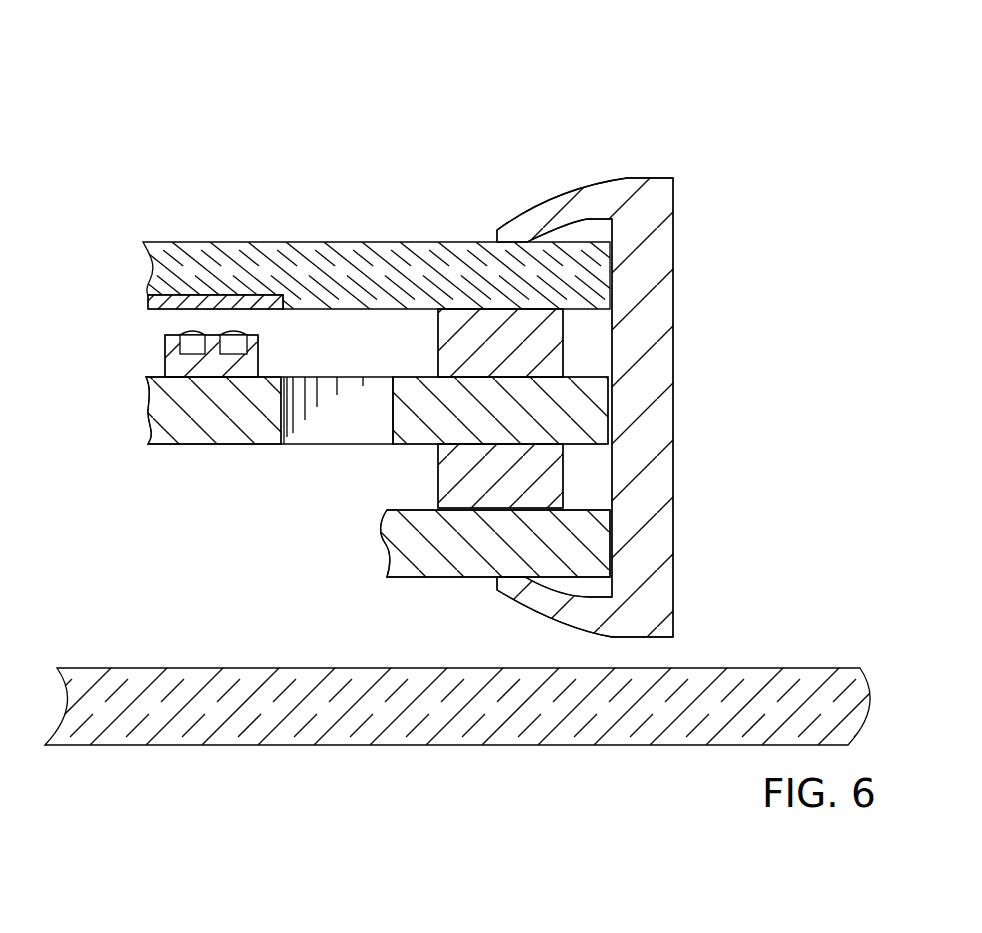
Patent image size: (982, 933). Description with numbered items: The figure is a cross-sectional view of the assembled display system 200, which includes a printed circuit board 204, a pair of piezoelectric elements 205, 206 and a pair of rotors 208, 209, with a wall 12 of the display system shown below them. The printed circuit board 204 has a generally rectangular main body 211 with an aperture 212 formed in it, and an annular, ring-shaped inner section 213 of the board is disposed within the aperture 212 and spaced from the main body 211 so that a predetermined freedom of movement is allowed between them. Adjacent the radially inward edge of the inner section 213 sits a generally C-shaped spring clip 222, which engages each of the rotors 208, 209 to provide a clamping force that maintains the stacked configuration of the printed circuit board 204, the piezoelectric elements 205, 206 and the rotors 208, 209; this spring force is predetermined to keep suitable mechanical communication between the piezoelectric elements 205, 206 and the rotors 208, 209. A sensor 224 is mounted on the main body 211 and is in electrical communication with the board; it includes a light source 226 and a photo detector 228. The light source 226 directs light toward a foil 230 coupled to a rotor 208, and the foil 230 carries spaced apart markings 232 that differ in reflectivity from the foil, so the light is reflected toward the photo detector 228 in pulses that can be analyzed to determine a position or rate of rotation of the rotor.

The display system 200 is at (690, 55).
The spring clip 222 is at (675, 178).
The rotor 208 is at (380, 242).
The foil 230 is at (140, 295).
The markings 232 is at (148, 318).
The light source 226 is at (185, 333).
The photo detector 228 is at (188, 308).
The sensor 224 is at (155, 363).
The main body 211 is at (148, 400).
The printed circuit board 204 is at (227, 414).
The aperture 212 is at (283, 444).
The piezoelectric element 205 is at (563, 348).
The inner section 213 is at (609, 401).
The piezoelectric element 206 is at (563, 477).
The rotor 209 is at (399, 577).
The wall 12 is at (860, 668).